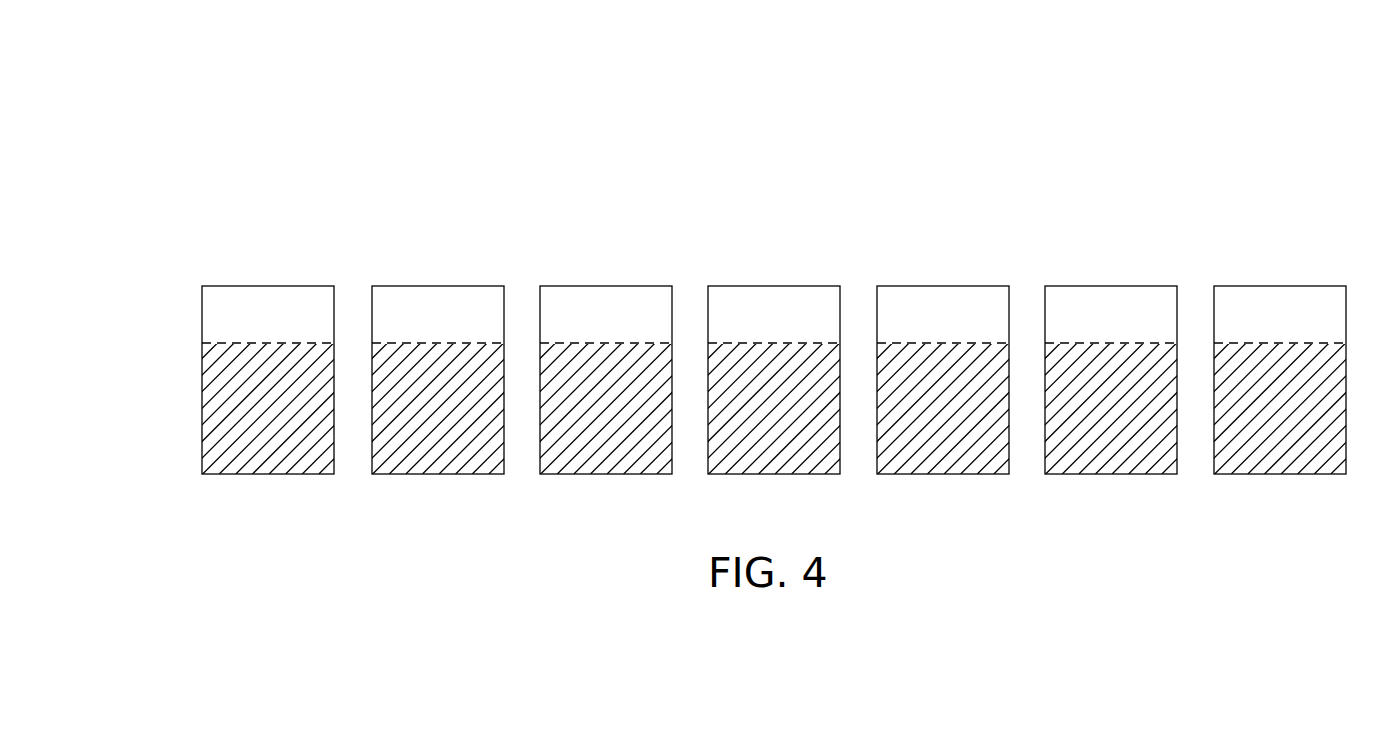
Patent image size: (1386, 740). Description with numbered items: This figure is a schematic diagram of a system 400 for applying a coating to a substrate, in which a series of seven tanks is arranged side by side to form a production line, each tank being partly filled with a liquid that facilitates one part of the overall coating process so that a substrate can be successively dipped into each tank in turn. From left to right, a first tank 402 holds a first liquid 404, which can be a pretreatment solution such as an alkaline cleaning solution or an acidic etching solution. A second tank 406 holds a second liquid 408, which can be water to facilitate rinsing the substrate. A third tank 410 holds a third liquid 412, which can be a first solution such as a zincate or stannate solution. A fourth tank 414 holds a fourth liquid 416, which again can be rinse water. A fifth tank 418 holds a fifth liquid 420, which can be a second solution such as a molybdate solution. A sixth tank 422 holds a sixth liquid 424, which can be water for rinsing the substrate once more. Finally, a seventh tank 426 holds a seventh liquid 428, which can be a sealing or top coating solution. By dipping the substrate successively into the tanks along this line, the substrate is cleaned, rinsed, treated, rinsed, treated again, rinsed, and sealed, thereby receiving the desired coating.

The system 400 is at (578, 140).
The first tank 402 is at (240, 286).
The second tank 406 is at (410, 286).
The third tank 410 is at (578, 286).
The fourth tank 414 is at (746, 286).
The fifth tank 418 is at (915, 286).
The sixth tank 422 is at (1083, 286).
The seventh tank 426 is at (1252, 286).
The first liquid 404 is at (290, 448).
The second liquid 408 is at (460, 448).
The third liquid 412 is at (628, 448).
The fourth liquid 416 is at (796, 448).
The fifth liquid 420 is at (965, 448).
The sixth liquid 424 is at (1133, 448).
The seventh liquid 428 is at (1320, 448).